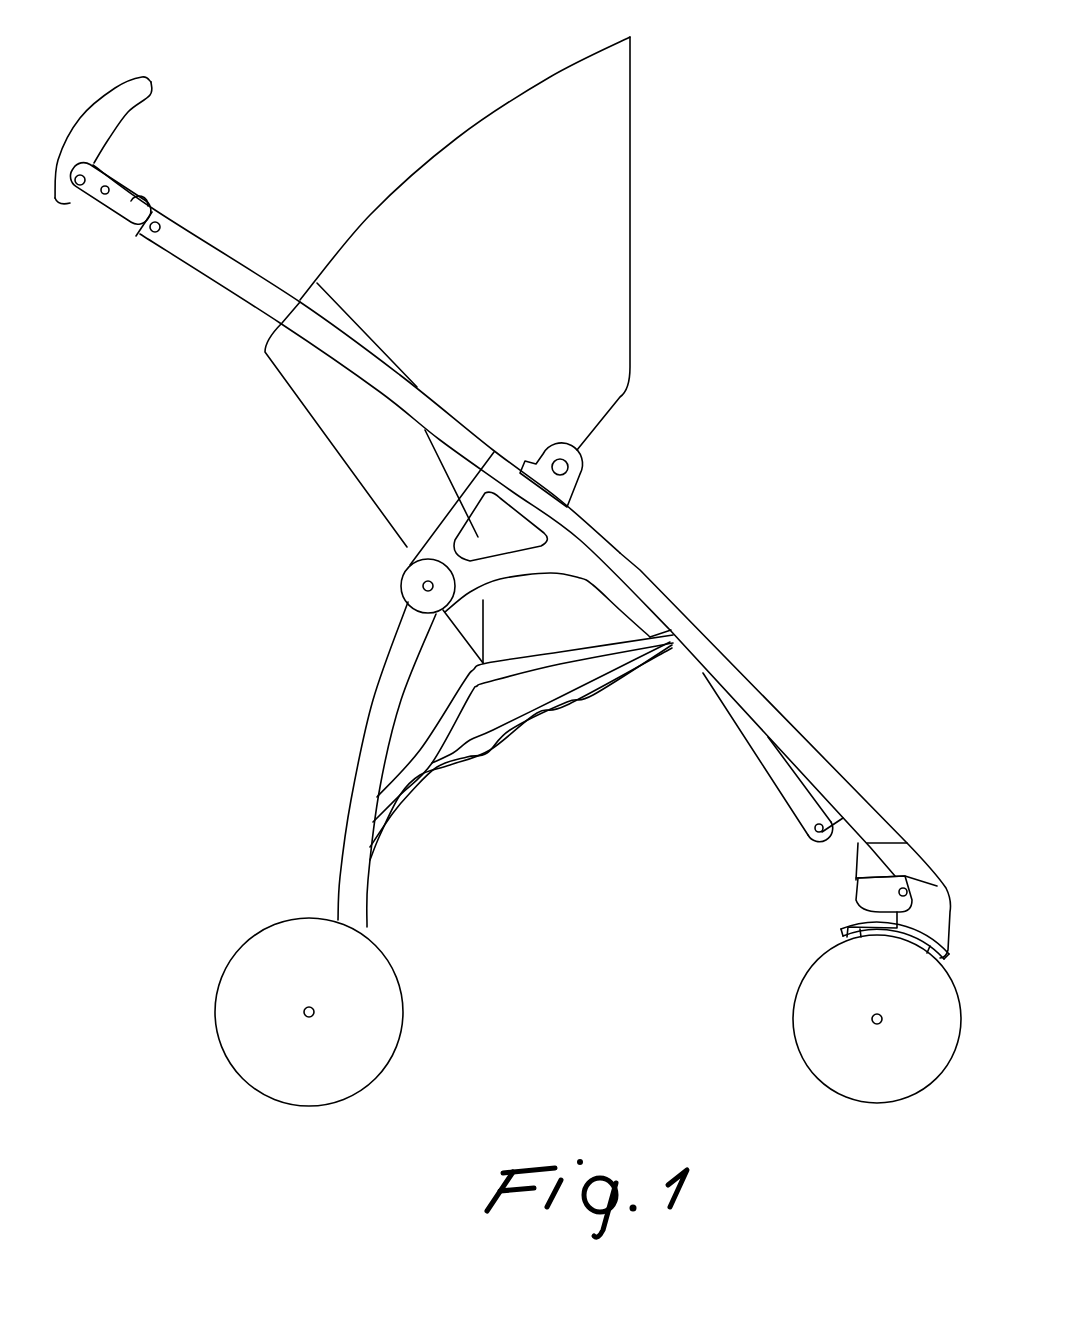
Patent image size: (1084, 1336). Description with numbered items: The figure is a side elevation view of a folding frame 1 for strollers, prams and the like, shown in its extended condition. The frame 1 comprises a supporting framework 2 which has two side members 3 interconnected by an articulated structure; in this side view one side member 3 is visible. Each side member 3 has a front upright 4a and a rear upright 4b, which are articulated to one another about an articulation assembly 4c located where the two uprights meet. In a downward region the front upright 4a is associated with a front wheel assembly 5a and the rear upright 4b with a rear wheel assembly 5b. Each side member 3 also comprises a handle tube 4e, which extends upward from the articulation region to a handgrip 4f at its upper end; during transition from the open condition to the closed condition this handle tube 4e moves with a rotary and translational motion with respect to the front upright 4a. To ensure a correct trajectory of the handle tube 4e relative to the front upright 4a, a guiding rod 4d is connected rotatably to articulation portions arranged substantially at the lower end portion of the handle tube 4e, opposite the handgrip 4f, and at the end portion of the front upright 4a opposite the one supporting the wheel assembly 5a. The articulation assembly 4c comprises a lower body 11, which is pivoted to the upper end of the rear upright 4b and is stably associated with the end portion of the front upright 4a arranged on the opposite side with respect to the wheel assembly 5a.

The folding frame 1 is at (724, 437).
The supporting framework 2 is at (405, 738).
The side member 3 is at (503, 485).
The front upright 4a is at (793, 738).
The rear upright 4b is at (372, 748).
The articulation assembly 4c is at (440, 553).
The guiding rod 4d is at (790, 790).
The handle tube 4e is at (243, 285).
The handgrip 4f is at (115, 112).
The front wheel assembly 5a is at (835, 982).
The rear wheel assembly 5b is at (292, 952).
The lower body 11 is at (462, 512).